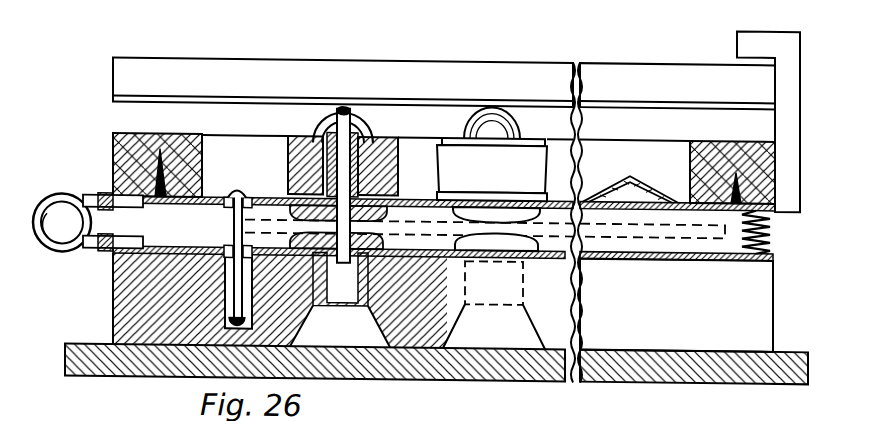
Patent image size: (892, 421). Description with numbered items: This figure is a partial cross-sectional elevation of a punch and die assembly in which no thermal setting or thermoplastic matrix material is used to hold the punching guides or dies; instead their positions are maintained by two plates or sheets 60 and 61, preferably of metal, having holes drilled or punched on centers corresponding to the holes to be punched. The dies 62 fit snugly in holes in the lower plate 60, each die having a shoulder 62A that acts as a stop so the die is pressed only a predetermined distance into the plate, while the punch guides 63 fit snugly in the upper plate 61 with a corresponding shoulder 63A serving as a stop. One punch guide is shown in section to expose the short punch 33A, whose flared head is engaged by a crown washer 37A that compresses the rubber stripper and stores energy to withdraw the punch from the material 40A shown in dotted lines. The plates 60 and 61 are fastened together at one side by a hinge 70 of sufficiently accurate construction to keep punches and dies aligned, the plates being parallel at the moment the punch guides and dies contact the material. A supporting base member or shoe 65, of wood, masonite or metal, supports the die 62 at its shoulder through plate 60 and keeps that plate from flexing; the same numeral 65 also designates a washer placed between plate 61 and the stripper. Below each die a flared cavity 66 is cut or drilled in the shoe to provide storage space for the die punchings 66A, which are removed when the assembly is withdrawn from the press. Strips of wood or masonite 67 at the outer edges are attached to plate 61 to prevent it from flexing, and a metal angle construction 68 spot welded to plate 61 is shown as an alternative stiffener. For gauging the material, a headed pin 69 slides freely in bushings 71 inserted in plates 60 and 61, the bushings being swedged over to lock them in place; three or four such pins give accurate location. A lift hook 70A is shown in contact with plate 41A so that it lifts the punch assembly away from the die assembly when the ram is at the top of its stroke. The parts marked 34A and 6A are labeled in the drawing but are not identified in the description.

The plate 41A is at (222, 95).
The pin 34A is at (343, 105).
The crown washer 37A is at (358, 125).
The punch 33A is at (372, 134).
The bearing assembly 6A is at (540, 152).
The supporting base member or shoe 65 is at (397, 196).
The hinge 70 is at (61, 194).
The lift hook 70A is at (795, 50).
The bushing 71 is at (233, 192).
The pin 69 is at (245, 218).
The shoulder 63A is at (380, 212).
The shoulder 62A is at (383, 241).
The punch guide 63 is at (539, 211).
The die 62 is at (538, 241).
The flared cavity 66 is at (357, 309).
The die punchings 66A is at (343, 332).
The metal angle construction 68 is at (647, 178).
The strips of wood or masonite 67 is at (777, 137).
The plate 61 is at (777, 195).
The plate 60 is at (774, 250).
The material 40A is at (634, 233).